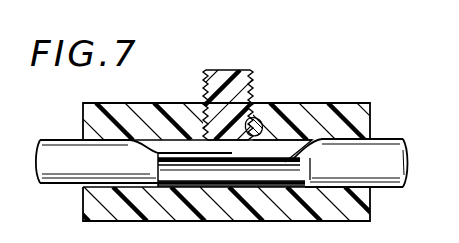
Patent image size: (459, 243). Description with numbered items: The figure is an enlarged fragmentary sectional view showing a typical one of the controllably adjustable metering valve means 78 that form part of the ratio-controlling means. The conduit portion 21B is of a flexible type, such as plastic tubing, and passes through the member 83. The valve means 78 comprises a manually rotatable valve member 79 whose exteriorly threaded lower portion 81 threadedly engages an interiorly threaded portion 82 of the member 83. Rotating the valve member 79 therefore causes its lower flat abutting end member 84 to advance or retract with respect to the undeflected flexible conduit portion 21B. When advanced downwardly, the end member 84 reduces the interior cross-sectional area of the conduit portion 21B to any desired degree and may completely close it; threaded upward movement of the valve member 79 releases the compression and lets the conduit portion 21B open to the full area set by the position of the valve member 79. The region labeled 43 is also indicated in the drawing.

The controllably adjustable metering valve means 78 is at (306, 84).
The manually rotatable valve member 79 is at (224, 76).
The exteriorly threaded lower portion 81 is at (257, 118).
The interiorly threaded portion 82 is at (277, 121).
The member 83 is at (140, 110).
The lower flat abutting end member 84 is at (206, 170).
The conduit portion 21B is at (393, 158).
The tube end 43 is at (458, 166).